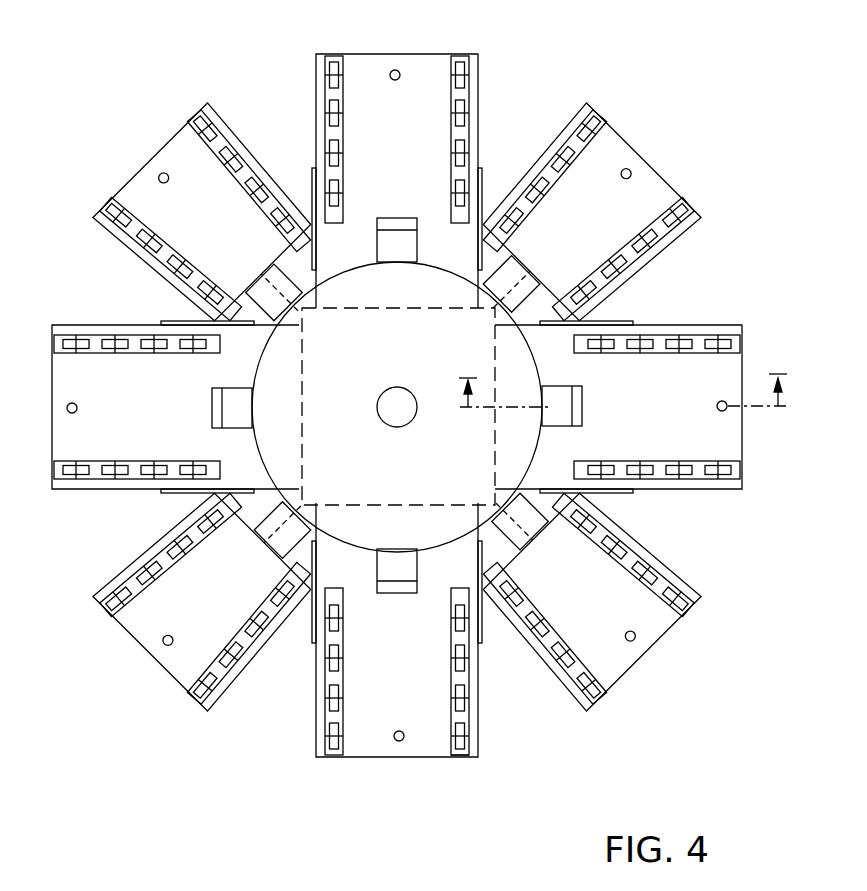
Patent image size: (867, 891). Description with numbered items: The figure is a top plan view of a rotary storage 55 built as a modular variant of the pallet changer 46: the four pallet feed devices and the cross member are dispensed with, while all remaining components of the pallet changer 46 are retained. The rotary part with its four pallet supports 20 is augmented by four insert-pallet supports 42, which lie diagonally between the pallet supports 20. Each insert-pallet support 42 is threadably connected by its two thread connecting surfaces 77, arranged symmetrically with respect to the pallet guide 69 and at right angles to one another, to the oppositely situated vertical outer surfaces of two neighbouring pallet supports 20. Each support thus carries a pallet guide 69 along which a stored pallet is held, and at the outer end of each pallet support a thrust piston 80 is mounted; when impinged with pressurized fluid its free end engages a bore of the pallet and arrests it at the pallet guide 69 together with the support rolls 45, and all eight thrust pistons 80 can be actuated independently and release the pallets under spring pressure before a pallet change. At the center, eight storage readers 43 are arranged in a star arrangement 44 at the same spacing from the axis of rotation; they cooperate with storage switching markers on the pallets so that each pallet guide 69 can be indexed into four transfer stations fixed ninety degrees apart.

The pallet support 20 is at (396, 55).
The insert-pallet support 42 is at (167, 160).
The storage reader 43 is at (396, 217).
The star arrangement 44 is at (418, 297).
The support roll 45 is at (214, 122).
The pallet changer 46 is at (308, 180).
The rotary storage 55 is at (305, 786).
The pallet guide 69 is at (461, 757).
The thread connecting surface 77 is at (177, 324).
The thrust piston 80 is at (395, 81).